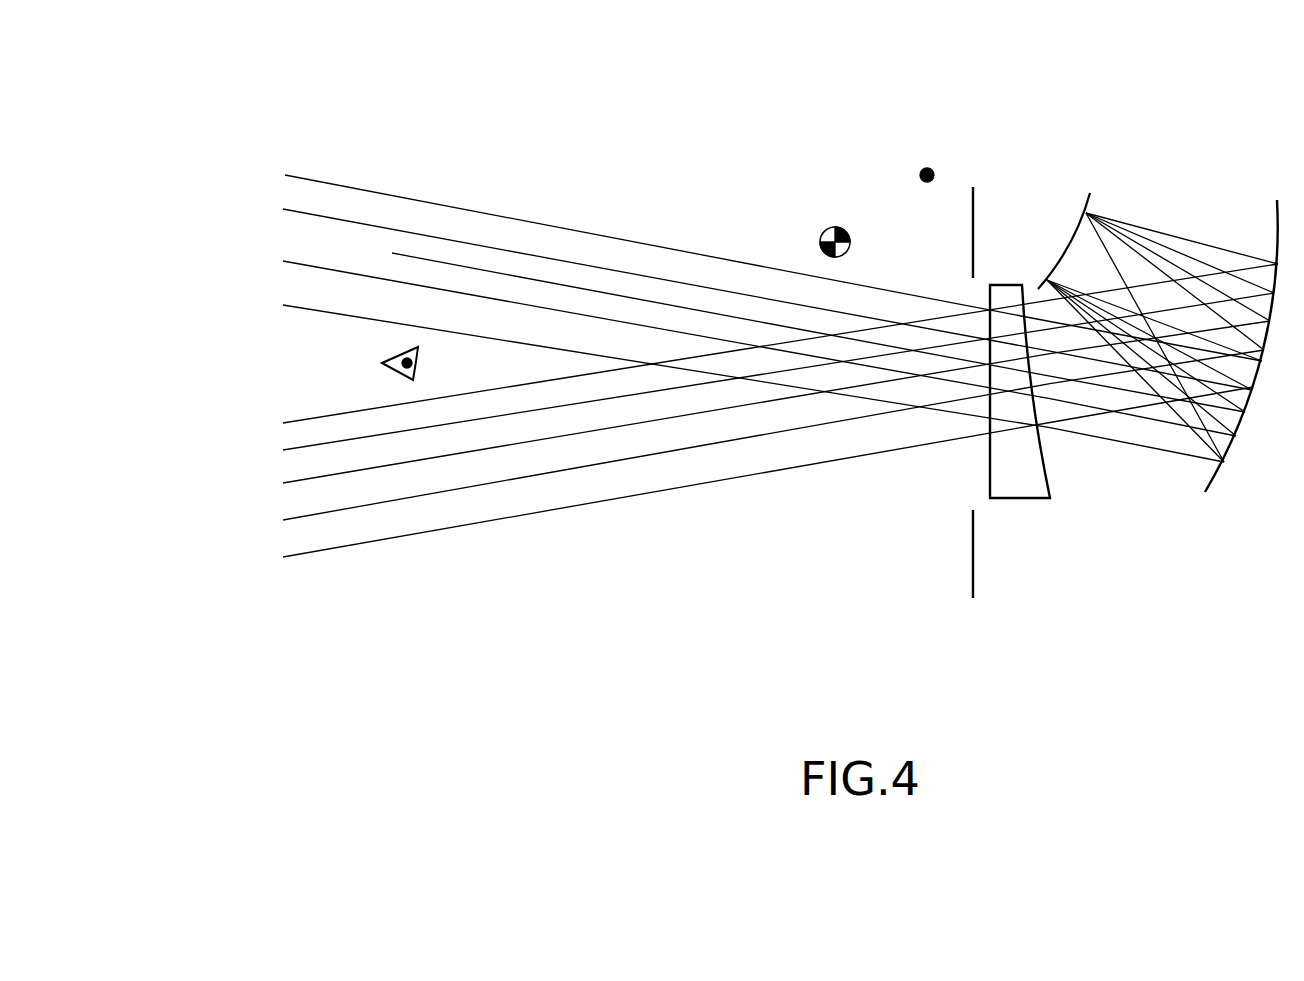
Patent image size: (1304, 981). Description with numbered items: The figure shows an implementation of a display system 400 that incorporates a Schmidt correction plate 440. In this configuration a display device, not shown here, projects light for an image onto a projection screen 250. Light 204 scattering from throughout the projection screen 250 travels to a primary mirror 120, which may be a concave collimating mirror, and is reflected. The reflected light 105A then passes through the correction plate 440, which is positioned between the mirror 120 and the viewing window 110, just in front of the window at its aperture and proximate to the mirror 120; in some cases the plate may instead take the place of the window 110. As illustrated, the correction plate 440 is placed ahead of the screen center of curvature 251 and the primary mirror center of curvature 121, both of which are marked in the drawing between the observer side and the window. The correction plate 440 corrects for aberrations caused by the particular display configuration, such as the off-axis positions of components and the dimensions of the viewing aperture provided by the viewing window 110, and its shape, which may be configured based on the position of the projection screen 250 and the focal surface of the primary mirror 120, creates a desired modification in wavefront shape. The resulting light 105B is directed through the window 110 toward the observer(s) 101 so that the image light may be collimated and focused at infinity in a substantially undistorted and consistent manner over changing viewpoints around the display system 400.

The display system 400 is at (526, 124).
The observer(s) 101 is at (317, 394).
The reflected light 105A is at (1112, 384).
The corrected light 105B is at (910, 376).
The light 204 is at (1112, 282).
The projection screen 250 is at (1091, 195).
The screen center of curvature 251 is at (908, 196).
The primary mirror center of curvature 121 is at (802, 264).
The correction plate 440 is at (1030, 500).
The primary mirror 120 is at (1205, 492).
The viewing window 110 is at (973, 598).